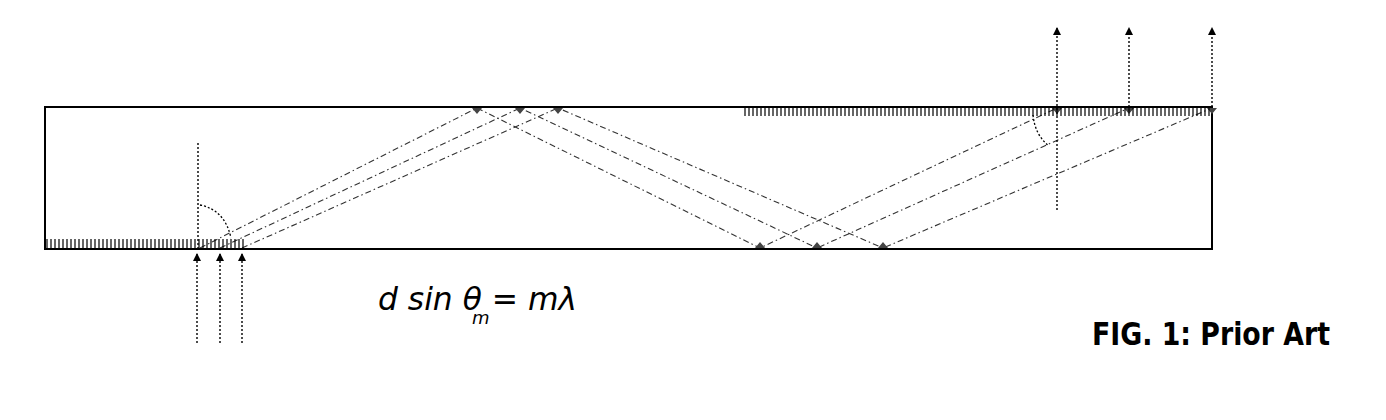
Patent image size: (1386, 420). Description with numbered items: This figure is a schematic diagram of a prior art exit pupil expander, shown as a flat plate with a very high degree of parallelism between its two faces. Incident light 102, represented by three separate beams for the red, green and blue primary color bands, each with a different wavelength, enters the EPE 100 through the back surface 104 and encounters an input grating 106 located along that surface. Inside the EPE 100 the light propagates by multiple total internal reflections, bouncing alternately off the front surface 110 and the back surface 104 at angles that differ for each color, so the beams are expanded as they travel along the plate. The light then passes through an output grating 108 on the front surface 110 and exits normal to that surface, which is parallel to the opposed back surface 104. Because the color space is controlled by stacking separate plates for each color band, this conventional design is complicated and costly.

The EPE 100 is at (219, 82).
The incident light 102 is at (276, 308).
The back surface 104 is at (1016, 266).
The input grating 106 is at (127, 254).
The output grating 108 is at (875, 105).
The front surface 110 is at (672, 100).